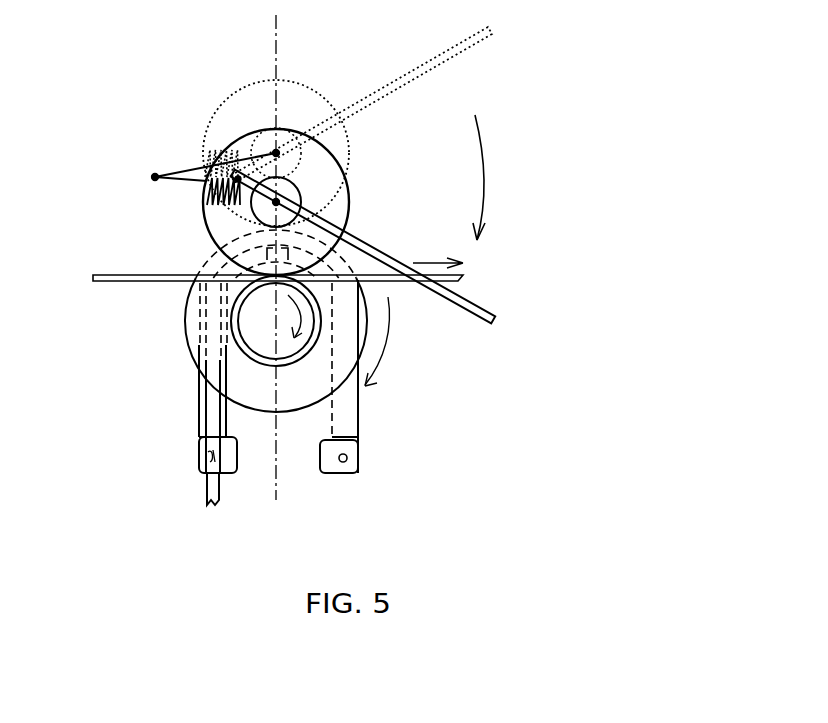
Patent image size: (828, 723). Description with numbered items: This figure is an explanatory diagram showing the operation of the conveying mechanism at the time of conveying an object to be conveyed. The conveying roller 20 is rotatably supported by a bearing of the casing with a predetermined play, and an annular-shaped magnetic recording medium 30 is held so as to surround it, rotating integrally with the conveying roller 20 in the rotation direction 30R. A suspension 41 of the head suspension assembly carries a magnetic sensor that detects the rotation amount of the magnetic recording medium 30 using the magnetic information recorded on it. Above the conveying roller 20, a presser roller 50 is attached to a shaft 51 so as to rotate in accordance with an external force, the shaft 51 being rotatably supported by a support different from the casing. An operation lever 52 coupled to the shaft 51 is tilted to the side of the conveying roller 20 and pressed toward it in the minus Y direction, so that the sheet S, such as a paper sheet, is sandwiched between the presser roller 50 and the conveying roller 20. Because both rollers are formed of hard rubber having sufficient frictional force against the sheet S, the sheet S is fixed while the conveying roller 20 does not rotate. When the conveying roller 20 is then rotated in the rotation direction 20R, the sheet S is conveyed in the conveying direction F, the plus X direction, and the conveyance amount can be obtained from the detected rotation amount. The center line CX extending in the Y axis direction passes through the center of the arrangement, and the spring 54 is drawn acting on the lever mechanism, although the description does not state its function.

The presser roller 50 is at (257, 98).
The shaft 51 is at (343, 197).
The operation lever 52 is at (460, 53).
The spring 54 is at (207, 143).
The conveying roller 20 is at (253, 328).
The magnetic recording medium 30 is at (303, 383).
The rotation direction 20R is at (305, 312).
The rotation direction 30R is at (383, 360).
The suspension 41 is at (397, 442).
The sheet S is at (130, 283).
The conveying direction F is at (428, 257).
The center line CX is at (283, 42).